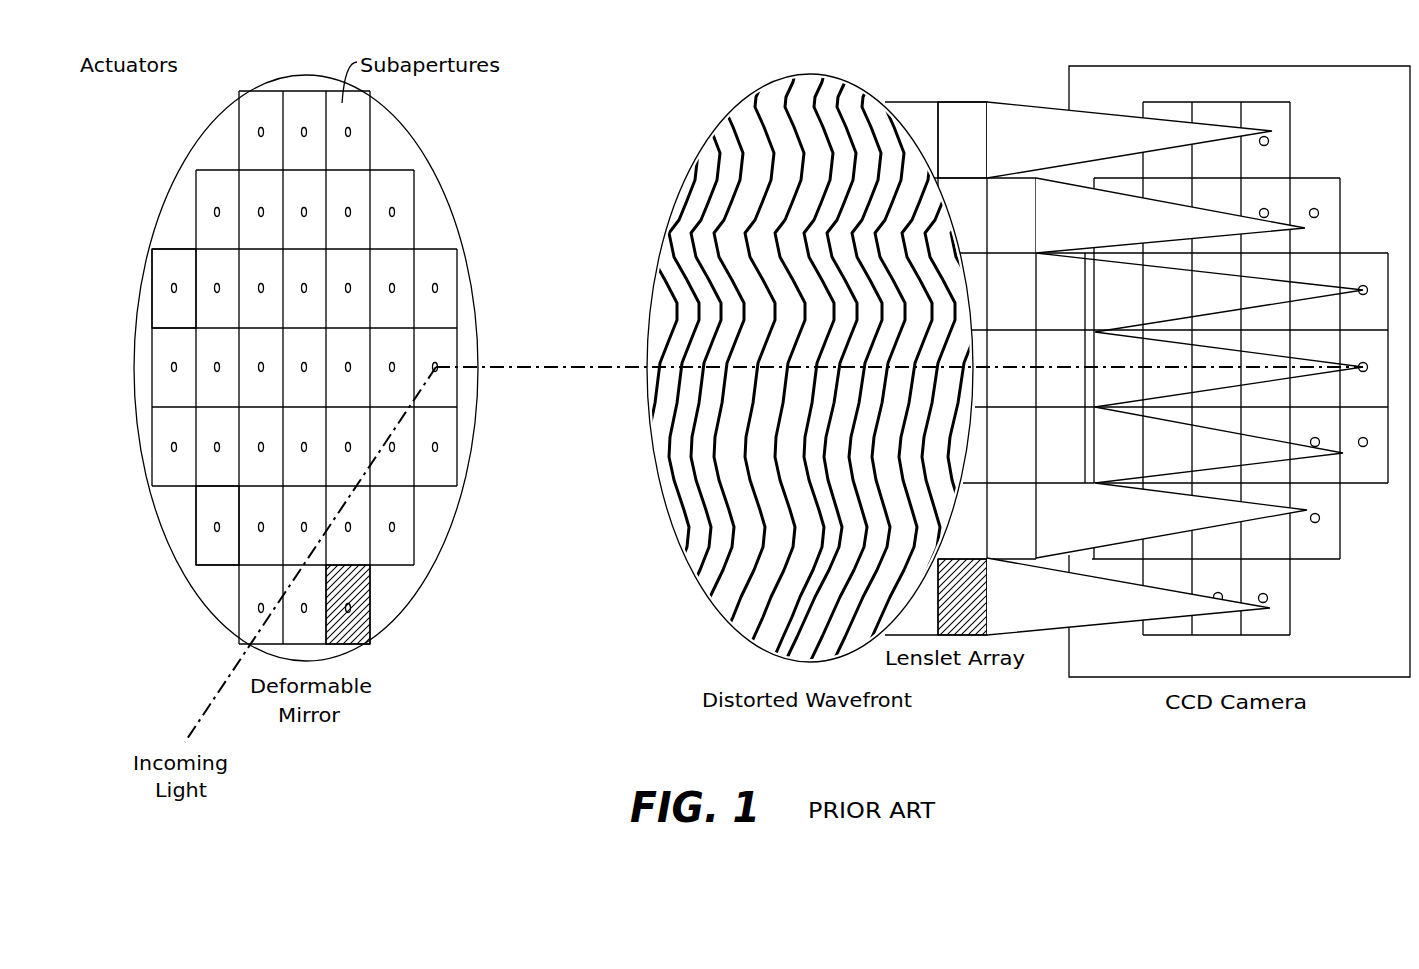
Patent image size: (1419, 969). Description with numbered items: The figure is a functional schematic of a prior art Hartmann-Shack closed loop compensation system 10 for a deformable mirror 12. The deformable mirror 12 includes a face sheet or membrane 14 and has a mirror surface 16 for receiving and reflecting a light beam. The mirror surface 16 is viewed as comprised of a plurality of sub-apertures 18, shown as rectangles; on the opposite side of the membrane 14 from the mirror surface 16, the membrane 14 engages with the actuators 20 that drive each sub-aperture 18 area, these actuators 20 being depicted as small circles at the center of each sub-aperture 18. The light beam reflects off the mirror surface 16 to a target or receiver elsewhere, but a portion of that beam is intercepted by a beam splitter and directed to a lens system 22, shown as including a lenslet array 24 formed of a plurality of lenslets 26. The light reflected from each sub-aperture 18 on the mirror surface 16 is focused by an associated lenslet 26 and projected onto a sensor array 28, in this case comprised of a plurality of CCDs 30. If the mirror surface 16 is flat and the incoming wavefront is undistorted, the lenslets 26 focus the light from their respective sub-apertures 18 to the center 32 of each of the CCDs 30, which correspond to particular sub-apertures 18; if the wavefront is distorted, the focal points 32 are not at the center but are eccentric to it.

The closed loop compensation system 10 is at (1011, 21).
The deformable mirror 12 is at (390, 150).
The face sheet or membrane 14 is at (176, 170).
The mirror surface 16 is at (175, 238).
The sub-apertures 18 is at (195, 542).
The actuators 20 is at (345, 129).
The lens system 22 is at (889, 95).
The lenslet array 24 is at (917, 123).
The lenslets 26 is at (1010, 215).
The sensor array 28 is at (1166, 103).
The CCDs 30 is at (1260, 112).
The center (focal point) 32 is at (1316, 208).